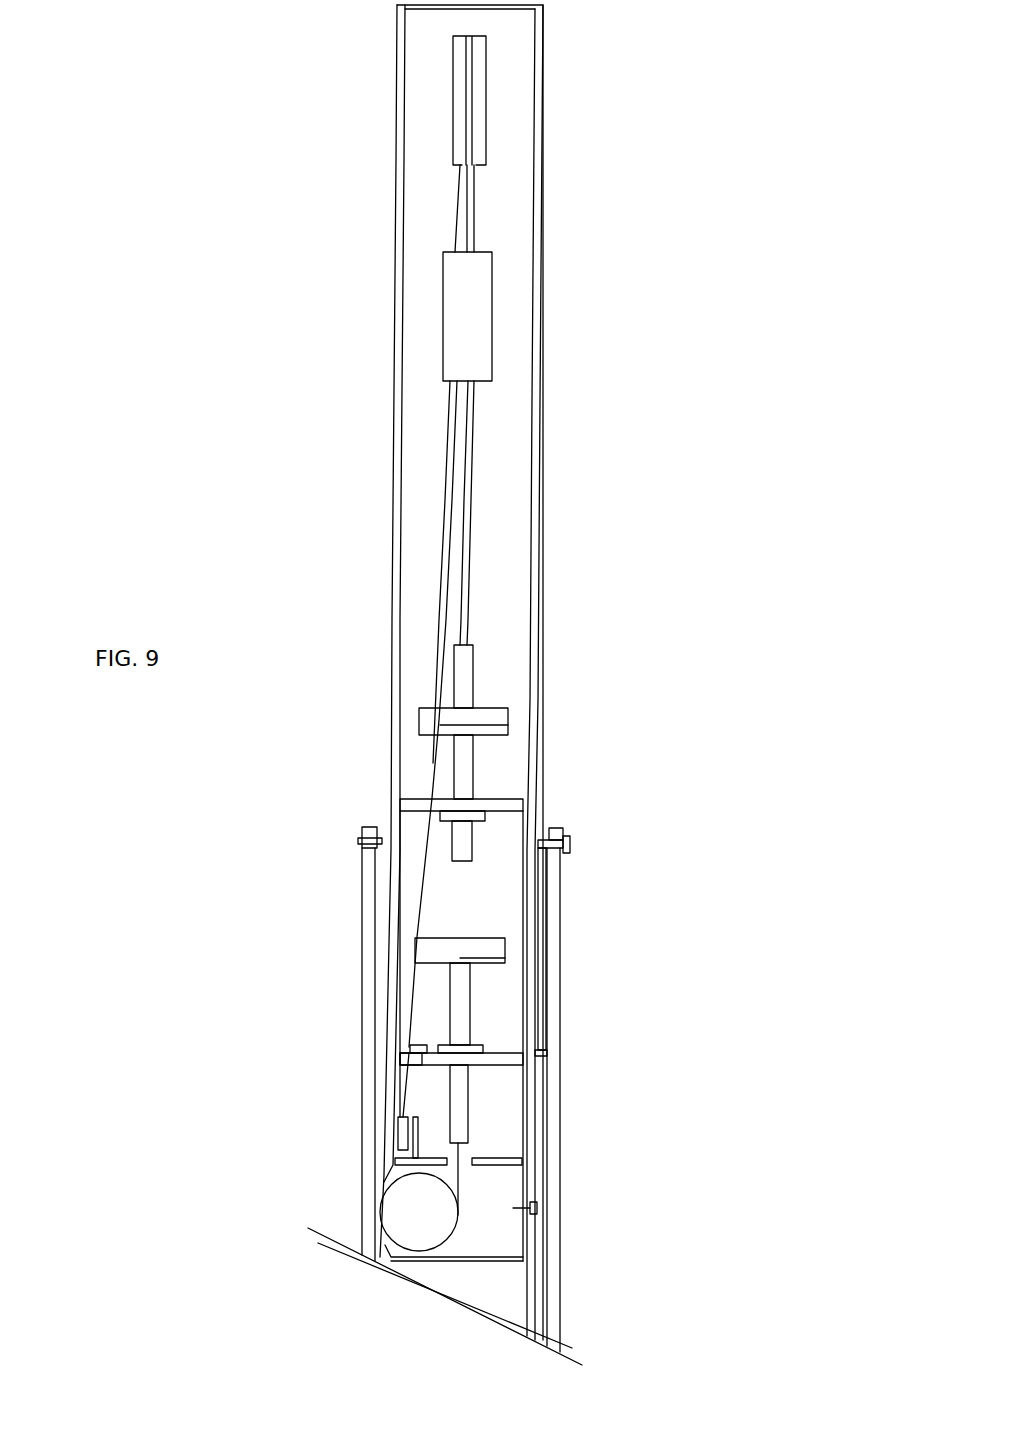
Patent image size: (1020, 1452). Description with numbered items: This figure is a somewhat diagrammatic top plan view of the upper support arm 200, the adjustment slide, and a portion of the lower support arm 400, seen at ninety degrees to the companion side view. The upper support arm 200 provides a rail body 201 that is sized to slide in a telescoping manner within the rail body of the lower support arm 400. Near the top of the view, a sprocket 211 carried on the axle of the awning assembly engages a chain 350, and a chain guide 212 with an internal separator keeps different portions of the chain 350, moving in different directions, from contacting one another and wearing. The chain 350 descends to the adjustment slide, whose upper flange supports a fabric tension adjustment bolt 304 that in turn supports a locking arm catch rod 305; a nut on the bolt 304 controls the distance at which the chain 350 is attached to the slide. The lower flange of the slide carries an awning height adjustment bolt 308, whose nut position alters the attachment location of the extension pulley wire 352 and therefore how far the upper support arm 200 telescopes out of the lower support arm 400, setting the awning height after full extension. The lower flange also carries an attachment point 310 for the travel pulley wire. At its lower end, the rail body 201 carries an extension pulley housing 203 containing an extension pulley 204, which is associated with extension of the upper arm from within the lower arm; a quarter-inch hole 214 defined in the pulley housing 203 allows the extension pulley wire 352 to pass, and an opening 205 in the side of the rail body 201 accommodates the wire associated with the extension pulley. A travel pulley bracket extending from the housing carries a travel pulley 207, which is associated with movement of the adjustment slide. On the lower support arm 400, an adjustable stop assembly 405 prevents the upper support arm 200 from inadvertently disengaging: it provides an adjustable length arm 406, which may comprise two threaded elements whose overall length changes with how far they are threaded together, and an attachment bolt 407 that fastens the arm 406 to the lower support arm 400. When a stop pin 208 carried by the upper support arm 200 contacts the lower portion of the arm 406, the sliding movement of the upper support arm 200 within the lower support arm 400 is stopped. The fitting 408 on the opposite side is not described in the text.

The upper support arm 200 is at (383, 197).
The rail body 201 is at (545, 376).
The sprocket 211 is at (486, 100).
The chain guide 212 is at (478, 303).
The chain 350 is at (478, 565).
The fabric tension adjustment bolt 304 is at (478, 672).
The locking arm catch rod 305 is at (508, 718).
The awning height adjustment bolt 308 is at (450, 1005).
The attachment point 310 is at (415, 1047).
The travel pulley 207 is at (400, 1130).
The opening 205 is at (387, 1180).
The extension pulley 204 is at (403, 1217).
The extension pulley housing 203 is at (475, 1163).
The stop pin 208 is at (540, 1207).
The extension pulley wire 352 is at (381, 905).
The left fitting 408 is at (360, 838).
The attachment bolt 407 is at (565, 830).
The adjustable stop assembly 405 is at (555, 925).
The adjustable length arm 406 is at (545, 995).
The quarter-inch hole 214 is at (467, 1173).
The lower support arm 400 is at (587, 1262).